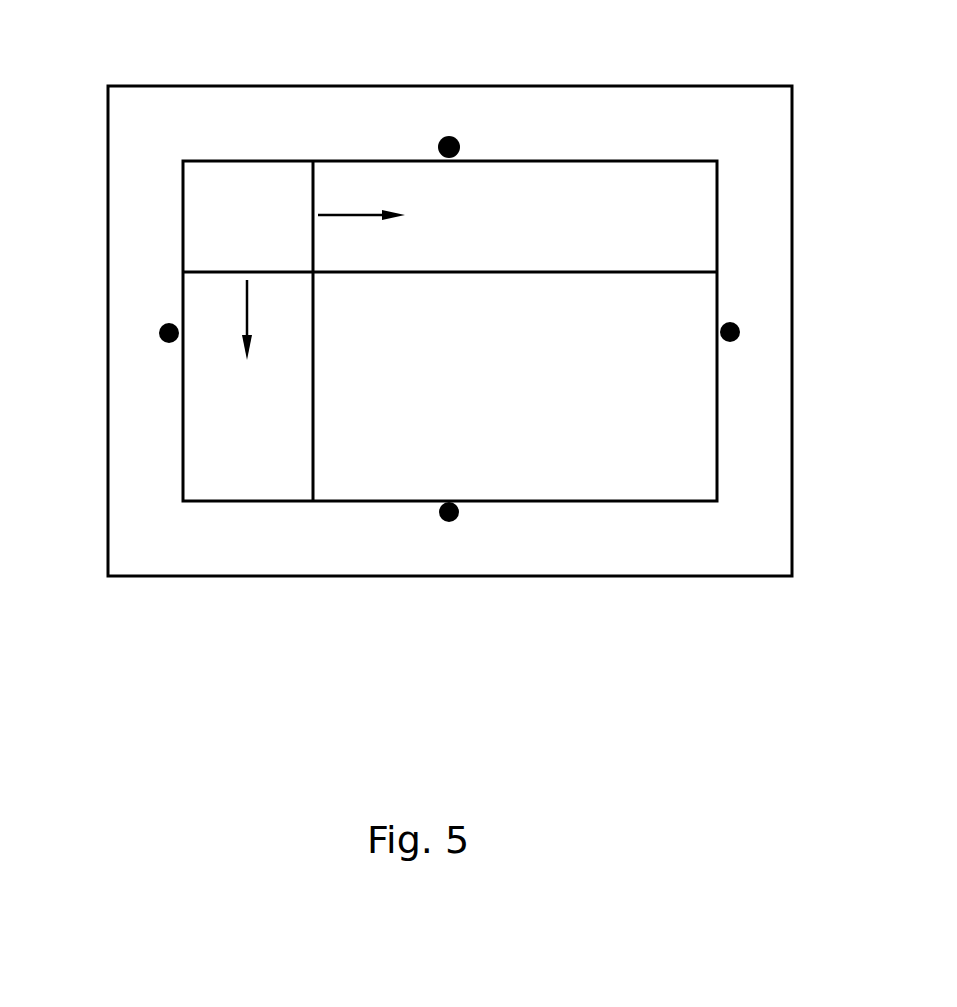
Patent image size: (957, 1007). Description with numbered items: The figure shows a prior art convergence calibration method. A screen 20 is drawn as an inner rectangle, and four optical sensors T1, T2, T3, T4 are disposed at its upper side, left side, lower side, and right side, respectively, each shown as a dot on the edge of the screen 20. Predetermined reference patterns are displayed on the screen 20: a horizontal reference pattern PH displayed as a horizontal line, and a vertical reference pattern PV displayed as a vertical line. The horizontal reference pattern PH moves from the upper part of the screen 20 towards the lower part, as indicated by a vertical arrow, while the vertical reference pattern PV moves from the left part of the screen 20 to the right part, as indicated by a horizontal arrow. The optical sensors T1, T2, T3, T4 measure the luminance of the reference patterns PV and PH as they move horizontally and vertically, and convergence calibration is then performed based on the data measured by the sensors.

The screen 20 is at (697, 178).
The vertical reference pattern PV is at (312, 182).
The horizontal reference pattern PH is at (212, 270).
The optical sensor T1 is at (453, 138).
The optical sensor T2 is at (166, 332).
The optical sensor T3 is at (442, 522).
The optical sensor T4 is at (735, 325).